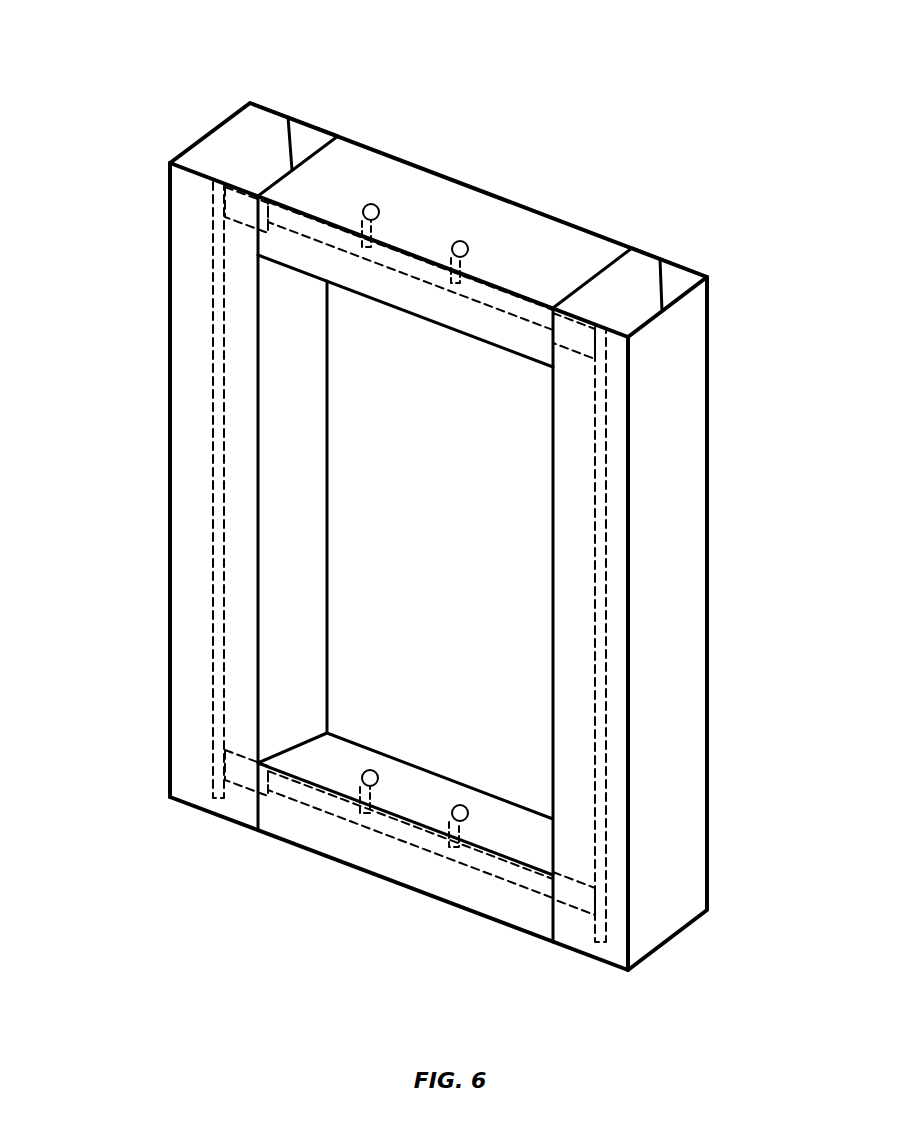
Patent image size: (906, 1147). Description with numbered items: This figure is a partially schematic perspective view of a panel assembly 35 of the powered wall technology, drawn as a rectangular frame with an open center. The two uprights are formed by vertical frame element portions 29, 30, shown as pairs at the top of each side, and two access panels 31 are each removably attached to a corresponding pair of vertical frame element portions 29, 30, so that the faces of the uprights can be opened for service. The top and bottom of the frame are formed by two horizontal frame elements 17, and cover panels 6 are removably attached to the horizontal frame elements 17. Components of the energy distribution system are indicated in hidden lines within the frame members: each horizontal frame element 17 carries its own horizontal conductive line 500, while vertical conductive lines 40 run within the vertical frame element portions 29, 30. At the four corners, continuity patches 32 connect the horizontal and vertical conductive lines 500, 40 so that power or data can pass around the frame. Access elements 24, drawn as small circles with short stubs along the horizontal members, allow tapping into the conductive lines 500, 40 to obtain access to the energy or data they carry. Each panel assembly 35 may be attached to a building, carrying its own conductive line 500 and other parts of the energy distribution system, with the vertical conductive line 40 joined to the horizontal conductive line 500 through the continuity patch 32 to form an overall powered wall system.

The panel assembly 35 is at (108, 80).
The cover panel 6 is at (475, 200).
The horizontal frame element 17 is at (518, 345).
The access element 24 is at (379, 209).
The vertical frame element portion 29 is at (268, 106).
The vertical frame element portion 30 is at (310, 124).
The access panel 31 is at (185, 290).
The continuity patch 32 is at (237, 203).
The vertical conductive line 40 is at (220, 388).
The horizontal conductive line 500 is at (518, 313).